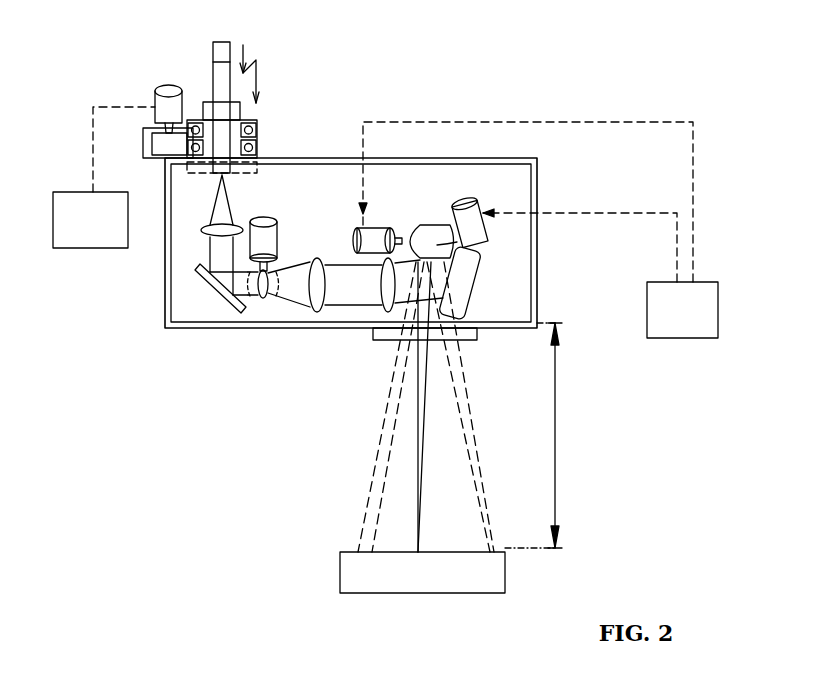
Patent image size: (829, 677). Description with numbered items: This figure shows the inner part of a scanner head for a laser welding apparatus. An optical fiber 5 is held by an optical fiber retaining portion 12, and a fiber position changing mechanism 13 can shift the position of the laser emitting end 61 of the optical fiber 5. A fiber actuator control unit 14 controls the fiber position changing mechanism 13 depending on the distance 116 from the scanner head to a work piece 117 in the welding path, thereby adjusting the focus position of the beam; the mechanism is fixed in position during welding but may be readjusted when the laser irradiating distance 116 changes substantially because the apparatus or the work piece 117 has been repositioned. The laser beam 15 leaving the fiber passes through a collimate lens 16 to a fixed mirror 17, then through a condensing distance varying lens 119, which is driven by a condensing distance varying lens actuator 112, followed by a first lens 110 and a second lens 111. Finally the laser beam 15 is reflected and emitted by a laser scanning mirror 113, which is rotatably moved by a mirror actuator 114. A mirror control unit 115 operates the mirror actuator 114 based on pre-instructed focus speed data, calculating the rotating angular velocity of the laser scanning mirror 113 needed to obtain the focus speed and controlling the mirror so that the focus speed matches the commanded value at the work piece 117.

The optical fiber 5 is at (212, 47).
The optical fiber retaining portion 12 is at (254, 122).
The laser emitting end 61 is at (225, 178).
The fiber position changing mechanism 13 is at (151, 140).
The fiber actuator control unit 14 is at (103, 231).
The collimate lens 16 is at (213, 228).
The fixed mirror 17 is at (196, 274).
The condensing distance varying lens actuator 112 is at (264, 219).
The condensing distance varying lens 119 is at (264, 300).
The first lens 110 is at (317, 313).
The second lens 111 is at (382, 272).
The mirror actuator 114 is at (386, 228).
The laser scanning mirror 113 is at (463, 281).
The mirror control unit 115 is at (670, 323).
The laser beam 15 is at (428, 483).
The distance 116 is at (551, 435).
The work piece 117 is at (404, 585).